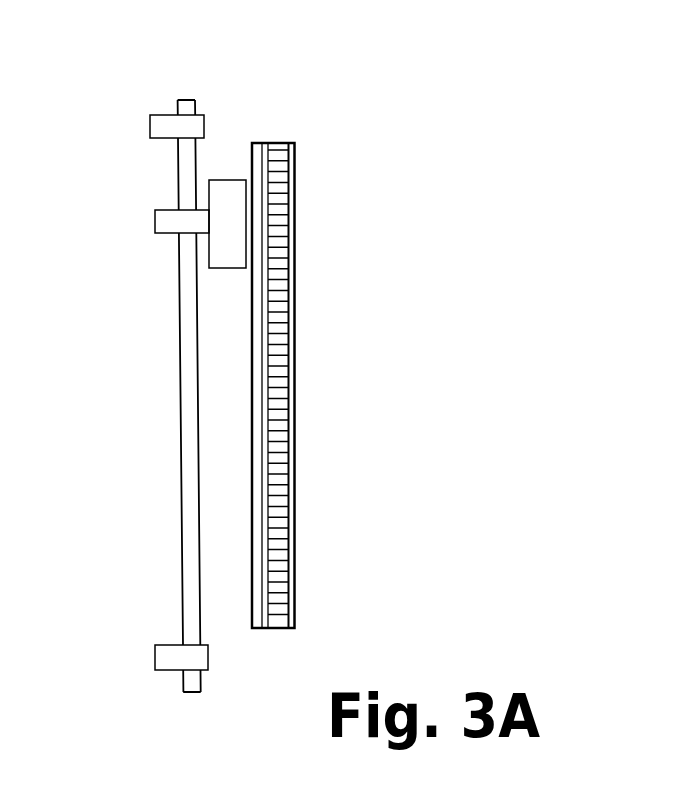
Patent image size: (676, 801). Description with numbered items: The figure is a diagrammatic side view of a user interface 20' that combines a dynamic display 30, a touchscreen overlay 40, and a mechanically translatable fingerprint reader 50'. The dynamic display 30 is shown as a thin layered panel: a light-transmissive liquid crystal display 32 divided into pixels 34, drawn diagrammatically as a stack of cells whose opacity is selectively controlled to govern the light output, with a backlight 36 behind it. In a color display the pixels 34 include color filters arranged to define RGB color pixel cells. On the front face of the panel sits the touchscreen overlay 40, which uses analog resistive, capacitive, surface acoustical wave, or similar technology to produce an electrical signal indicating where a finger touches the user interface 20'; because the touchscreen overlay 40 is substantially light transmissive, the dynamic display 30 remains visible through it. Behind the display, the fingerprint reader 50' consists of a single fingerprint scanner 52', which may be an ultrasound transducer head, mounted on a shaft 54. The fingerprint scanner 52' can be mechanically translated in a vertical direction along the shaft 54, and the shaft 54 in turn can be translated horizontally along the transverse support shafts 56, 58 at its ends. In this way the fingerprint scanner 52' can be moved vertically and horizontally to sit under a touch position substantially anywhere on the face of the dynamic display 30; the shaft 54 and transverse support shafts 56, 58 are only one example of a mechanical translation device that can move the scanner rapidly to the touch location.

The user interface 20' is at (318, 385).
The dynamic display 30 is at (292, 634).
The liquid crystal display 32 is at (272, 142).
The pixels 34 is at (280, 343).
The backlight 36 is at (260, 142).
The touchscreen overlay 40 is at (295, 177).
The fingerprint reader 50' is at (159, 353).
The fingerprint scanner 52' is at (166, 254).
The shaft 54 is at (188, 438).
The transverse support shaft 56 is at (162, 128).
The transverse support shaft 58 is at (168, 655).